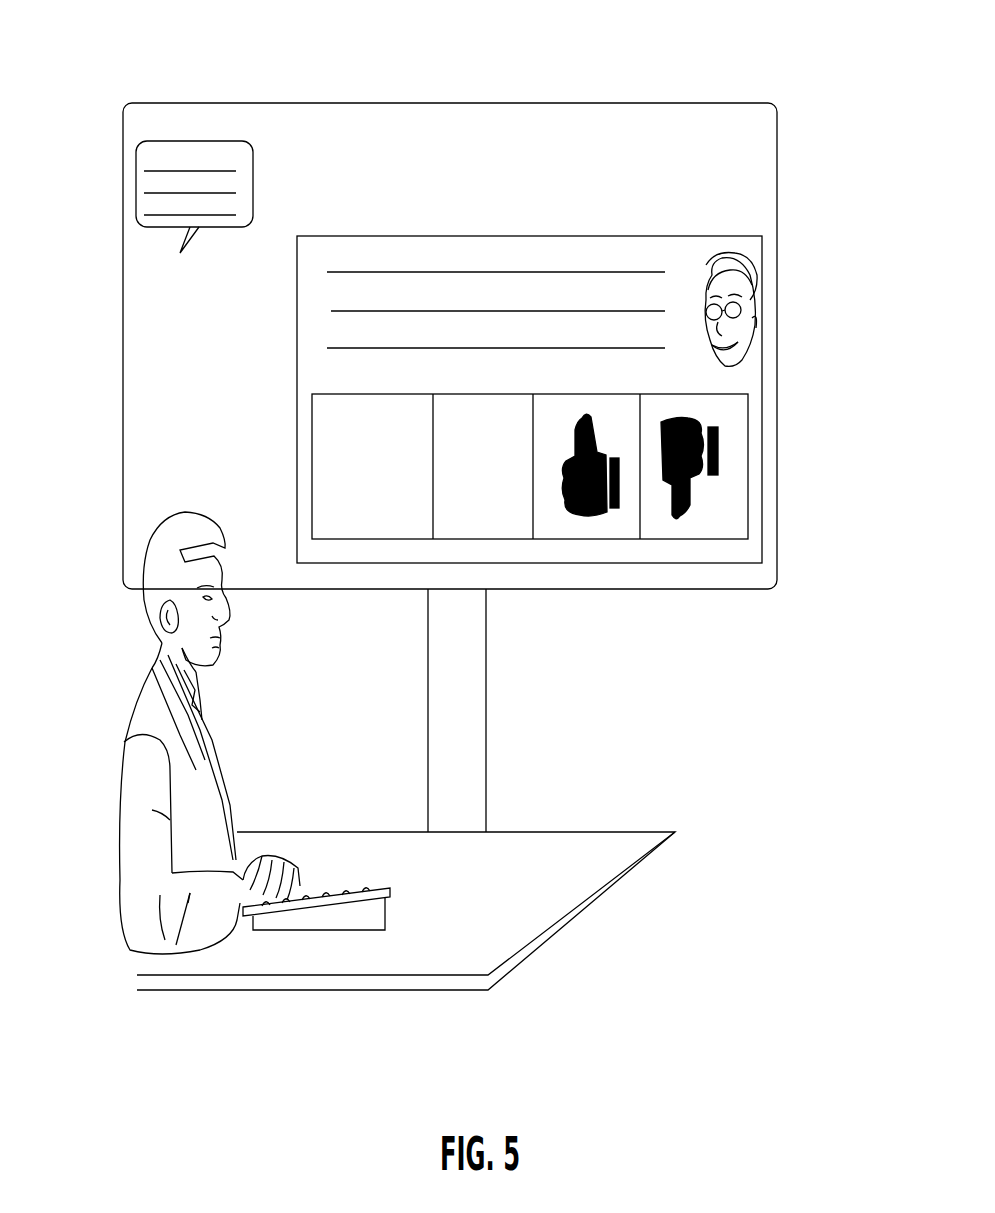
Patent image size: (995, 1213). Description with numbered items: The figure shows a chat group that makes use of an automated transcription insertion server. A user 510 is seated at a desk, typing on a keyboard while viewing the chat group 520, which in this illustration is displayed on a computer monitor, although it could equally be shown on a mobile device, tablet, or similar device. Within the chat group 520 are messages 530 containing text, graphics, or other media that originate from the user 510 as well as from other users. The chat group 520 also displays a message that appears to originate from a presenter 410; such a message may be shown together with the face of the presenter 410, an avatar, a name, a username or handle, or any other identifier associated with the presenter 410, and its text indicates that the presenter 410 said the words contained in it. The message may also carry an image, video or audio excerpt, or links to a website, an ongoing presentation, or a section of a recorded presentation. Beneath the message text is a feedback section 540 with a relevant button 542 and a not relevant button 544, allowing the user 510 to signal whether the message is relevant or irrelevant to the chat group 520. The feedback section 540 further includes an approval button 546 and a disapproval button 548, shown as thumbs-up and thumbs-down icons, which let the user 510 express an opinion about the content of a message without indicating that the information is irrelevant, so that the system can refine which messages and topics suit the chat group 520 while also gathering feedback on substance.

The presenter 410 is at (771, 298).
The user 510 is at (222, 733).
The chat group 520 is at (450, 423).
The messages 530 is at (155, 190).
The feedback section 540 is at (575, 521).
The relevant button 542 is at (372, 553).
The not relevant button 544 is at (487, 543).
The approval button 546 is at (591, 535).
The disapproval button 548 is at (690, 538).